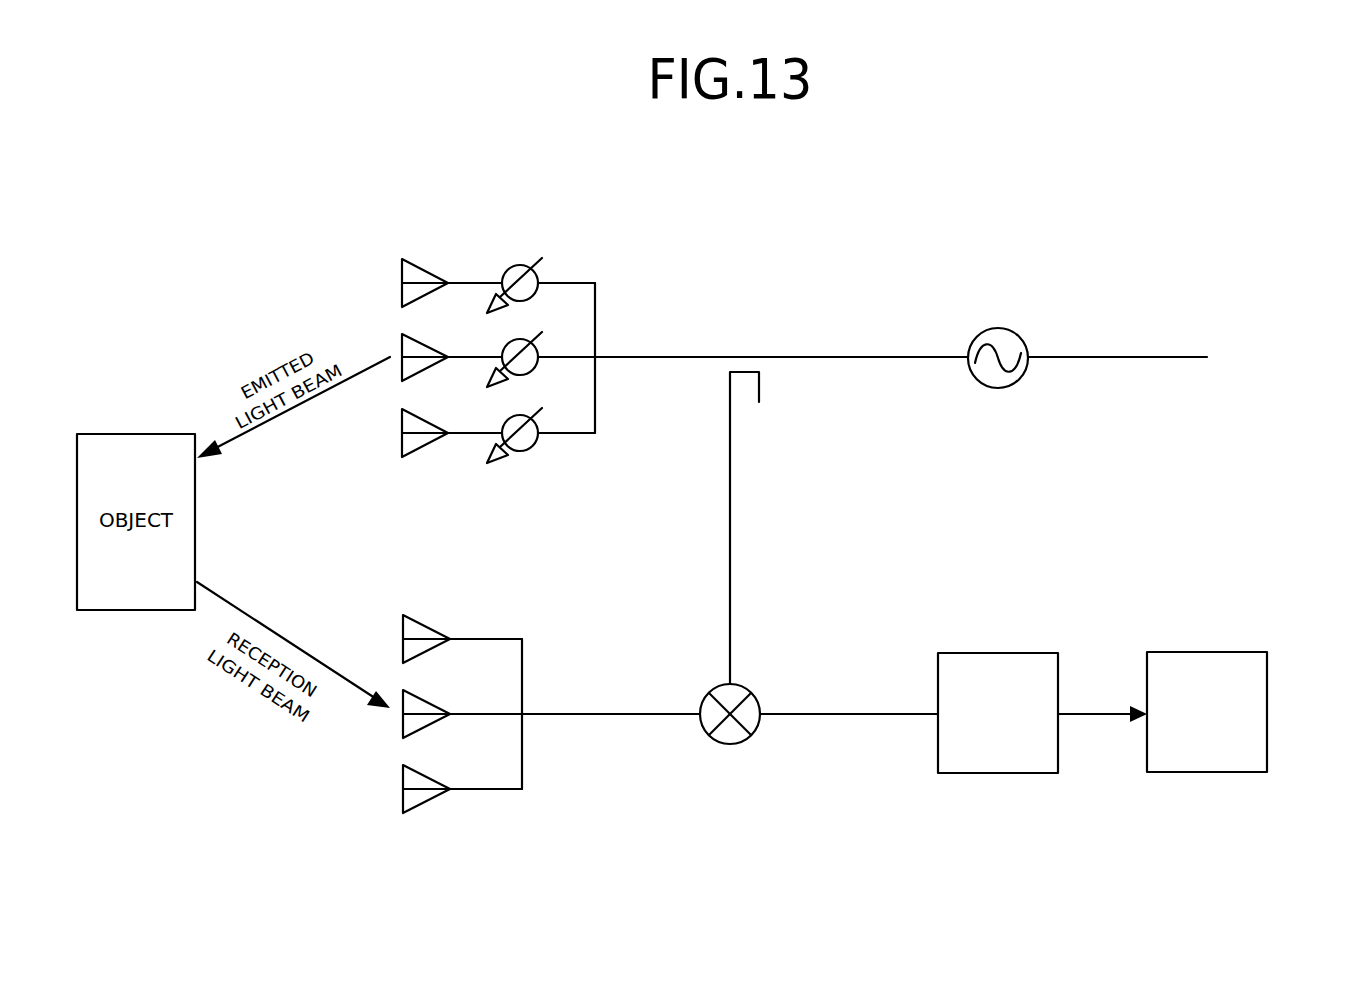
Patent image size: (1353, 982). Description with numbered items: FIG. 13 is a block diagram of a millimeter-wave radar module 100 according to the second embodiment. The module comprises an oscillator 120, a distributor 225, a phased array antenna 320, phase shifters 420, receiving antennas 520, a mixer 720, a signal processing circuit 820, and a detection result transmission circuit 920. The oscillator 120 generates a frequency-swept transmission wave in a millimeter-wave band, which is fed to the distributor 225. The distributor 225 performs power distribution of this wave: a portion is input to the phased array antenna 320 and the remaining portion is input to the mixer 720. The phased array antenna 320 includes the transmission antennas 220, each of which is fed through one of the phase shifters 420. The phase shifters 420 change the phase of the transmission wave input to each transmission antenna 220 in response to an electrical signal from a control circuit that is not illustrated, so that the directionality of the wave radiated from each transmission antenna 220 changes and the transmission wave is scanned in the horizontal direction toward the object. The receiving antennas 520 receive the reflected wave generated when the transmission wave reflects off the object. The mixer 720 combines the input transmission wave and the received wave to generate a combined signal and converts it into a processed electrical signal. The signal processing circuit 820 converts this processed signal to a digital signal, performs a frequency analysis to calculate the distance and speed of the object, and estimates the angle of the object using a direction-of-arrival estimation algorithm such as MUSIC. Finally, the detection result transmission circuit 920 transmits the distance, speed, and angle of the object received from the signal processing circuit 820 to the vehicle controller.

The millimeter-wave radar module 100 is at (1023, 238).
The oscillator 120 is at (1002, 330).
The transmission antennas 220 is at (423, 268).
The distributor 225 is at (759, 366).
The phased array antenna 320 is at (463, 270).
The phase shifters 420 is at (540, 263).
The receiving antennas 520 is at (497, 637).
The mixer 720 is at (752, 689).
The signal processing circuit 820 is at (1018, 652).
The detection result transmission circuit 920 is at (1238, 652).